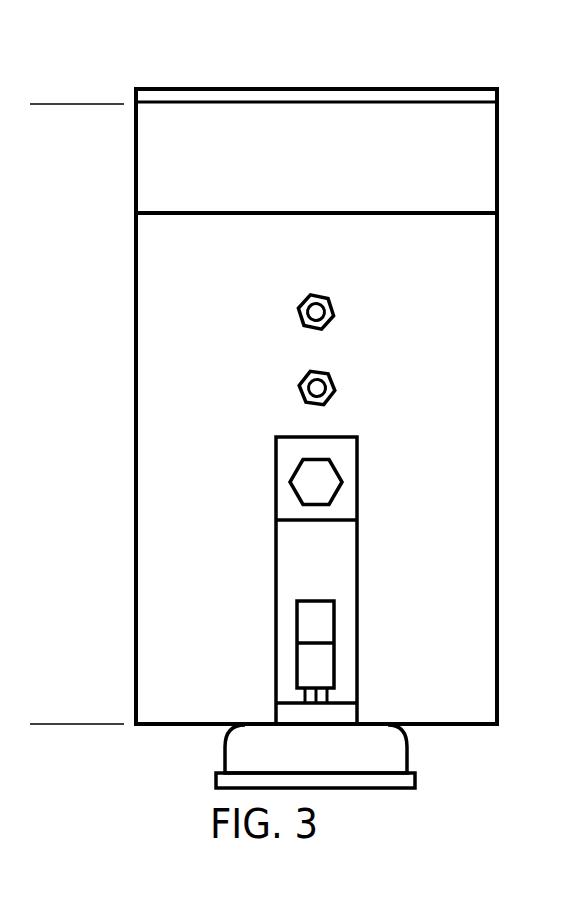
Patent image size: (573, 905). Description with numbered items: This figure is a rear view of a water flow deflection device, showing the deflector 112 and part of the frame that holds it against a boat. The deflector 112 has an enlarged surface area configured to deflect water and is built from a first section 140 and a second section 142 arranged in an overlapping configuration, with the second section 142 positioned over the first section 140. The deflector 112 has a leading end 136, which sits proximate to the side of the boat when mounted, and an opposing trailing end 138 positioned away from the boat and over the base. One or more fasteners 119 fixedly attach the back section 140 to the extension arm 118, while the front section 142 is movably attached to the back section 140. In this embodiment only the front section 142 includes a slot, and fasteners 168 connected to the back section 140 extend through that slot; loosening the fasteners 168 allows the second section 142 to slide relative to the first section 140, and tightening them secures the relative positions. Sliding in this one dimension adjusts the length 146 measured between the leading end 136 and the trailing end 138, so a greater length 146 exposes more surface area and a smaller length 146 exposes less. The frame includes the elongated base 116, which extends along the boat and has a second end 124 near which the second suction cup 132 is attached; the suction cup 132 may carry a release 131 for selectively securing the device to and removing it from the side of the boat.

The deflector 112 is at (257, 253).
The elongated base 116 is at (276, 712).
The extension arm 118 is at (326, 553).
The fasteners 119 is at (327, 482).
The second end of base 124 is at (335, 713).
The release 131 is at (336, 623).
The second suction cup 132 is at (408, 754).
The leading end 136 is at (483, 726).
The trailing end 138 is at (453, 88).
The first section 140 is at (467, 290).
The second section 142 is at (175, 127).
The length 146 is at (73, 104).
The fasteners 168 is at (300, 317).